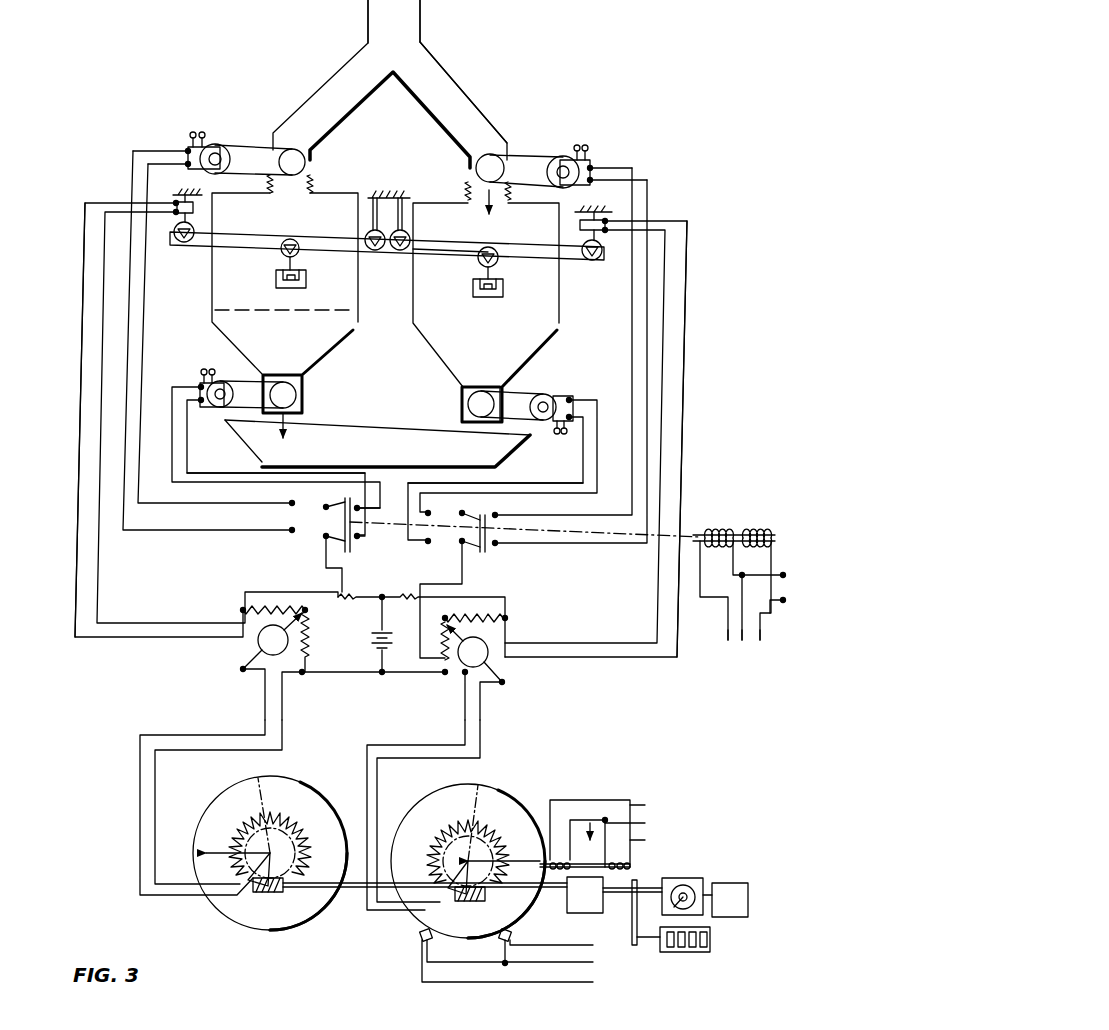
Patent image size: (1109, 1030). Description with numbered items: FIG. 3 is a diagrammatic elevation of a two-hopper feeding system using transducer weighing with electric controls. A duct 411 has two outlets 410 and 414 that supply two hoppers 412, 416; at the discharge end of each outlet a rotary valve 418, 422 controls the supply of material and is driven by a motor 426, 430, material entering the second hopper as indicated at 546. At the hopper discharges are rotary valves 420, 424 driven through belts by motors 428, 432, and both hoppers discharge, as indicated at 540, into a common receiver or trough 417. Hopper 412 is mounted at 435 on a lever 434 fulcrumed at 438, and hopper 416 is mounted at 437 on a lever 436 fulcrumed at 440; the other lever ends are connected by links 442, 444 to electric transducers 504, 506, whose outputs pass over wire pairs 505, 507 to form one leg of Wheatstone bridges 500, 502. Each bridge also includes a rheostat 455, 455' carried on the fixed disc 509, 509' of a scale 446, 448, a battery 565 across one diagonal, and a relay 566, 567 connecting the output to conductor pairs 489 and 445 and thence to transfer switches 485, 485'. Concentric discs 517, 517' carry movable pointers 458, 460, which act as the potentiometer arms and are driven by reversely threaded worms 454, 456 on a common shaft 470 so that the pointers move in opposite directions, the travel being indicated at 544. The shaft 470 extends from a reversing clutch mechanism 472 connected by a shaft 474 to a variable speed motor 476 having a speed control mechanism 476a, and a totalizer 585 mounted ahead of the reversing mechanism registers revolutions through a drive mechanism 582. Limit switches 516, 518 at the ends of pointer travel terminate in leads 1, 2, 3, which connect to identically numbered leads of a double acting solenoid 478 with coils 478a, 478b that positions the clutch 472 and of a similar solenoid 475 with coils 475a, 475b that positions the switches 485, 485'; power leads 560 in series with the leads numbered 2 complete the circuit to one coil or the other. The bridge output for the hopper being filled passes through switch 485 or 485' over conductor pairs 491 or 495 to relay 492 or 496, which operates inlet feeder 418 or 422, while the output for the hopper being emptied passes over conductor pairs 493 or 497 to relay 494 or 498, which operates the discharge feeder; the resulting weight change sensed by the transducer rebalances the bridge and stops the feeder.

The outlet 410 is at (333, 90).
The duct 411 is at (424, 22).
The outlet 414 is at (468, 97).
The rotary valve 418 is at (312, 158).
The rotary valve 422 is at (477, 161).
The motor 426 is at (248, 132).
The motor 430 is at (560, 160).
The relay 492 is at (186, 150).
The relay 496 is at (592, 165).
The hopper 412 is at (215, 283).
The hopper 416 is at (560, 322).
The rotary valve 420 is at (300, 393).
The rotary valve 424 is at (462, 405).
The lever 434 is at (255, 246).
The link 442 is at (176, 237).
The mounting point 435 is at (300, 226).
The fulcrum 438 is at (374, 250).
The fulcrum 440 is at (400, 250).
The mounting point 437 is at (498, 240).
The lever 436 is at (450, 258).
The link 444 is at (600, 255).
The electric transducer 504 is at (172, 203).
The electric transducer 506 is at (612, 221).
The feed arrow 546 is at (485, 205).
The motor 428 is at (226, 382).
The relay 494 is at (199, 381).
The motor 432 is at (535, 396).
The relay 498 is at (590, 392).
The common receiver or trough 417 is at (505, 458).
The discharge arrow 540 is at (290, 443).
The control wiring 493 is at (215, 462).
The control wiring 497 is at (574, 475).
The wire pair 505 is at (72, 400).
The wire pair 507 is at (690, 412).
The control wiring 495 is at (660, 175).
The control wiring 491 is at (157, 538).
The transfer switch 485 is at (346, 532).
The wire 489 is at (312, 562).
The transfer switch 485' is at (525, 539).
The conductor pairs 445 is at (470, 578).
The double acting solenoid 475 is at (740, 512).
The coil 475a is at (717, 520).
The coil 475b is at (758, 525).
The leads 560 is at (783, 608).
The lead 1 is at (724, 645).
The lead 2 is at (741, 645).
The lead 3 is at (761, 645).
The Wheatstone bridge 500 is at (235, 615).
The relay 566 is at (258, 648).
The battery 565 is at (375, 660).
The Wheatstone bridge 502 is at (513, 630).
The relay 567 is at (488, 660).
The wires 544 is at (165, 837).
The scale 446 is at (218, 784).
The fixed disc 509 is at (322, 852).
The rheostat or potentiometer 455 is at (273, 815).
The disc 517 is at (242, 801).
The worm 454 is at (266, 893).
The movable pointer 458 is at (225, 850).
The common shaft 470 is at (340, 912).
The limit switch 516 is at (420, 935).
The scale 448 is at (522, 782).
The fixed disc 509' is at (473, 850).
The rheostat or potentiometer 455' is at (444, 836).
The disc 517' is at (496, 804).
The worm 456 is at (468, 901).
The movable pointer 460 is at (535, 908).
The limit switch 518 is at (508, 966).
The reversing clutch mechanism 472 is at (580, 912).
The shaft 474 is at (618, 890).
The speed control mechanism 476a is at (690, 880).
The variable speed motor 476 is at (740, 878).
The totalizer 585 is at (700, 952).
The drive mechanism 582 is at (634, 945).
The double acting solenoid 478 is at (598, 795).
The coil 478a is at (560, 860).
The coil 478b is at (620, 860).